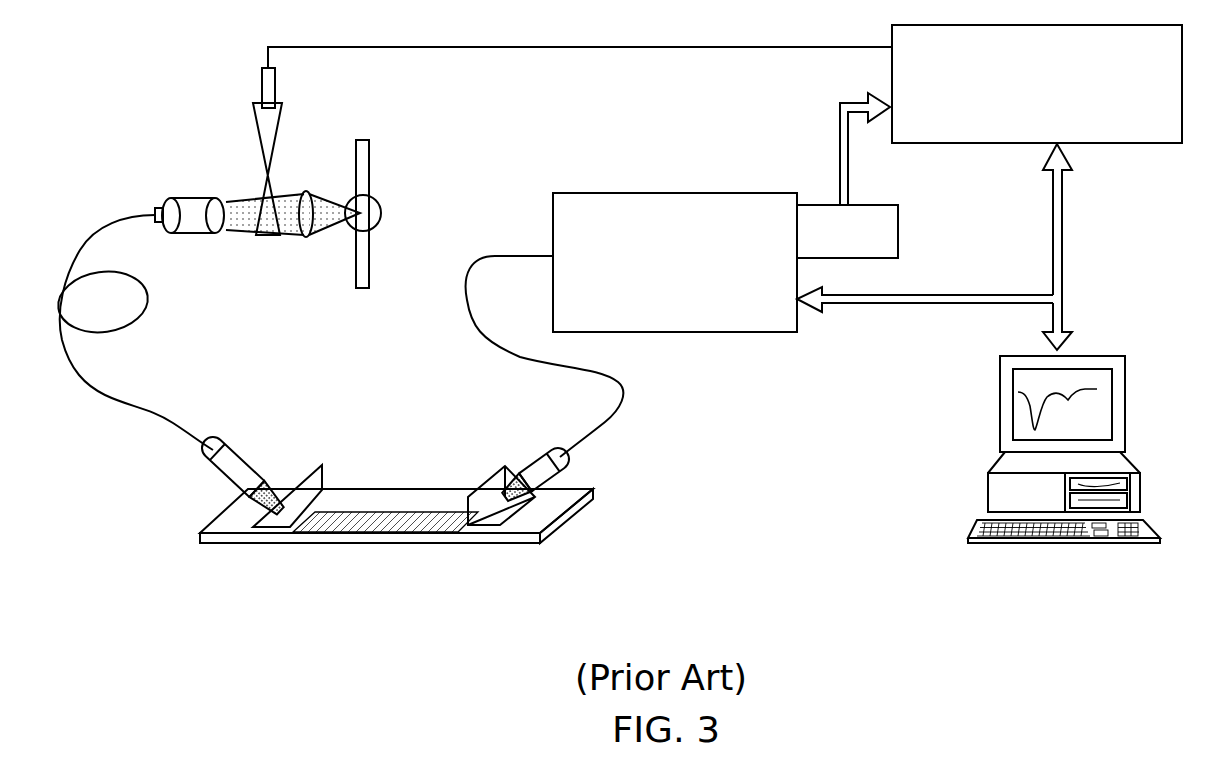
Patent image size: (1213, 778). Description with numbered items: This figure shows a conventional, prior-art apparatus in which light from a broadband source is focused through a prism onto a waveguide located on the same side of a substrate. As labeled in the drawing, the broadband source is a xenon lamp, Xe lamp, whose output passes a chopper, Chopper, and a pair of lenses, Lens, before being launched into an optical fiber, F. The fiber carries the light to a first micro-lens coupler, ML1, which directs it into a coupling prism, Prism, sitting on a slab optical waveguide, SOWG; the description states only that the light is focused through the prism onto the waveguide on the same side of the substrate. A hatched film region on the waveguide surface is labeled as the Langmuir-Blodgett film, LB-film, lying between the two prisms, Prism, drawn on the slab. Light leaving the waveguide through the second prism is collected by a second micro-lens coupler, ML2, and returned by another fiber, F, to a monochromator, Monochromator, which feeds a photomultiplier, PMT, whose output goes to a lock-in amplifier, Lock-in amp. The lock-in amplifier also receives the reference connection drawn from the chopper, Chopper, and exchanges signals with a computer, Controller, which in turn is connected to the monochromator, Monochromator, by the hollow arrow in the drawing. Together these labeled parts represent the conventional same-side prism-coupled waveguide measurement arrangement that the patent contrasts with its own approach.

The optical chopper Chopper is at (212, 151).
The xenon lamp light source Xe lamp is at (396, 196).
The lens / collimating optics Lens is at (257, 232).
The optical fiber F is at (347, 336).
The micro lens 1 (input coupling) ML1 is at (242, 463).
The micro lens 2 (output coupling) ML2 is at (565, 464).
The prism Prism is at (490, 481).
The slab optical waveguide SOWG is at (447, 509).
The Langmuir-Blodgett film LB-film is at (383, 545).
The monochromator Monochromator is at (675, 262).
The photomultiplier tube PMT is at (847, 231).
The lock-in amplifier Lock-in amp. is at (1037, 84).
The controller computer Controller is at (1064, 470).